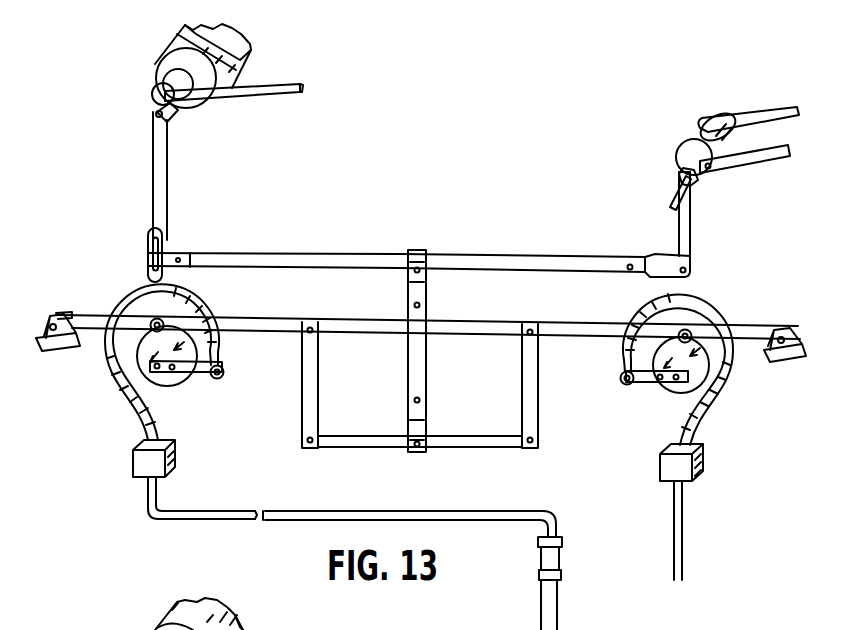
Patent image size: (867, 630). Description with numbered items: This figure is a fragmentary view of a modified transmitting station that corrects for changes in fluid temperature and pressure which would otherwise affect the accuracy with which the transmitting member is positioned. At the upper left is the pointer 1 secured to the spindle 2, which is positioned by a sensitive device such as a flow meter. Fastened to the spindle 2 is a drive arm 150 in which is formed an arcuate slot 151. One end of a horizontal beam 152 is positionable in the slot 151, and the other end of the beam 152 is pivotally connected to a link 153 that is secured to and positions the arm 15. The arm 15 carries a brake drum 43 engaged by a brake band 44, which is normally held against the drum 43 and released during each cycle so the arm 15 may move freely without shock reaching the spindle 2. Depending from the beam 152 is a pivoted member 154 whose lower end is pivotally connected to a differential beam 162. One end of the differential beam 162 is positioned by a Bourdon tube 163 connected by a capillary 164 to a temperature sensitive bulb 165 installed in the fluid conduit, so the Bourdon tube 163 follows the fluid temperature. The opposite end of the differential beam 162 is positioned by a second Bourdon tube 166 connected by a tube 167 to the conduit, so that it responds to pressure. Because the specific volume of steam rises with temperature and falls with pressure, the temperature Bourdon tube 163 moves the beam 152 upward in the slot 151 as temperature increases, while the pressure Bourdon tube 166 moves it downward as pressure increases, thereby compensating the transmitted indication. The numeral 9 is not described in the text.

The pointer 1 is at (282, 84).
The spindle 2 is at (155, 121).
The upper arm 9 is at (726, 120).
The arm 15 is at (786, 146).
The brake drum 43 is at (710, 176).
The brake band 44 is at (681, 138).
The drive arm 150 is at (168, 163).
The arcuate slot 151 is at (150, 245).
The horizontal beam 152 is at (470, 258).
The link 153 is at (694, 222).
The pivoted member 154 is at (425, 332).
The differential beam 162 is at (446, 447).
The Bourdon tube 163 is at (204, 296).
The capillary 164 is at (196, 514).
The temperature sensitive bulb 165 is at (556, 594).
The Bourdon tube 166 is at (714, 306).
The tube 167 is at (688, 515).